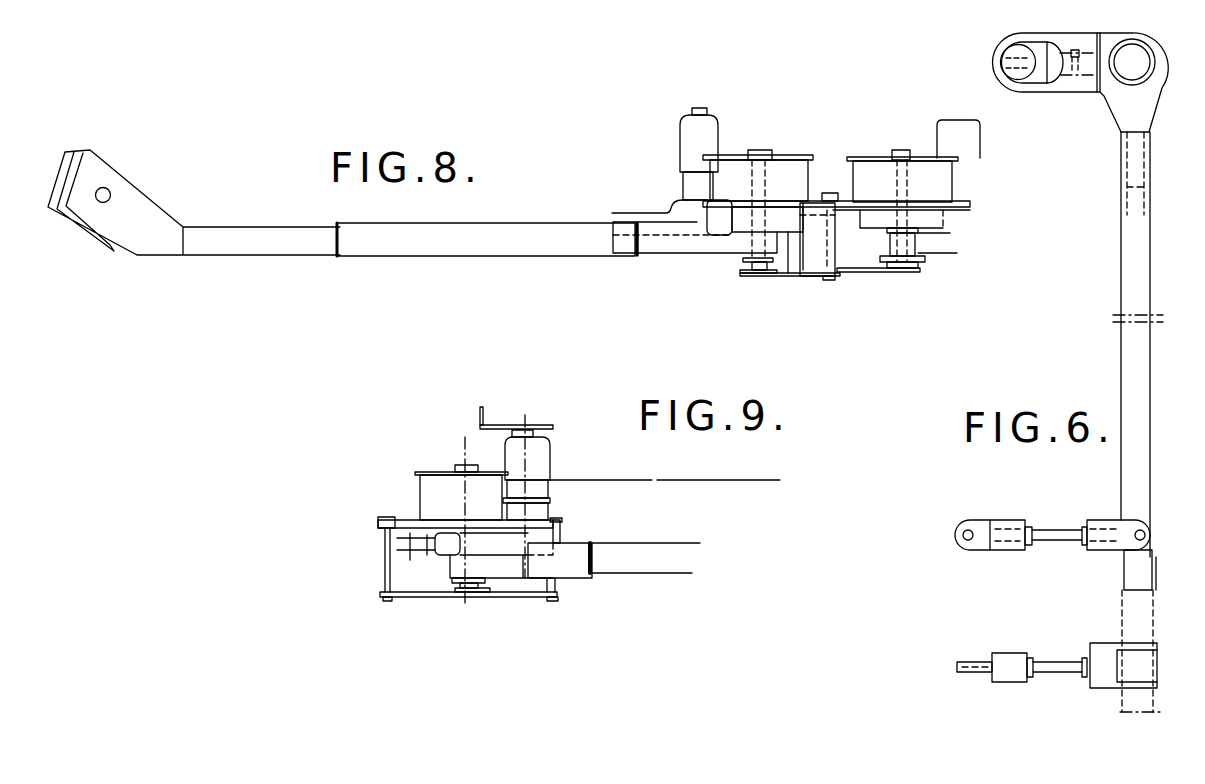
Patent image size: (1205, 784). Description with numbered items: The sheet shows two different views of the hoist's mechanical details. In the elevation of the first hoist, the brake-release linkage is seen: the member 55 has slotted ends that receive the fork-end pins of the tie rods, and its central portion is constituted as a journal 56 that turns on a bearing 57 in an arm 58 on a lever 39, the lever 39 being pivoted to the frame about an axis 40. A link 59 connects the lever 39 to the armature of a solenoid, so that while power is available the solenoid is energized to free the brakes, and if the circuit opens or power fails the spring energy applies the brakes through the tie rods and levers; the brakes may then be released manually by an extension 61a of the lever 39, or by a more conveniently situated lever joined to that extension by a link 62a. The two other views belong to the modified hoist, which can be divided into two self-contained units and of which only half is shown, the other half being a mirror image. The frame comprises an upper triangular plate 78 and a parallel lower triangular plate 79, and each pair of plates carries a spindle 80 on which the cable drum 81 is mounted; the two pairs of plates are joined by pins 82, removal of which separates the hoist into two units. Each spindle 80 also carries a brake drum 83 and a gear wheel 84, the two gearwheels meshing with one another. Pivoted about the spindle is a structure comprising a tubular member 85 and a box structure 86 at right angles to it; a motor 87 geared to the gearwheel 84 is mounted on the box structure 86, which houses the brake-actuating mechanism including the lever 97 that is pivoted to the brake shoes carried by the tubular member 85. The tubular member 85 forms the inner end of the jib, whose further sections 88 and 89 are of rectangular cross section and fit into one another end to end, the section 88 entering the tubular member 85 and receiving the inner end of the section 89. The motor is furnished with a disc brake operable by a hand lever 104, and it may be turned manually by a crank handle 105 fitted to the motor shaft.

In FIG. 6, the lever 39 is at (1128, 298).
In FIG. 6, the axis 40 is at (1133, 67).
In FIG. 6, the member 55 is at (1042, 30).
In FIG. 6, the journal 56 is at (1008, 43).
In FIG. 6, the bearing 57 is at (1030, 60).
In FIG. 6, the arm 58 is at (1075, 50).
In FIG. 6, the link 59 is at (1052, 528).
In FIG. 6, the tube 61a is at (1133, 602).
In FIG. 6, the clevis link 62a is at (1007, 658).
In FIG. 8, the upper triangular plate 78 is at (840, 195).
In FIG. 9, the upper triangular plate 78 is at (410, 527).
In FIG. 8, the lower triangular plate 79 is at (782, 273).
In FIG. 9, the lower triangular plate 79 is at (443, 595).
In FIG. 8, the spindle 80 is at (768, 150).
In FIG. 8, the cable drum 81 is at (732, 157).
In FIG. 9, the cable drum 81 is at (443, 482).
In FIG. 8, the pin 82 is at (828, 240).
In FIG. 9, the pin 82 is at (383, 572).
In FIG. 8, the brake drum 83 is at (790, 232).
In FIG. 9, the brake drum 83 is at (427, 553).
In FIG. 8, the gear wheel 84 is at (780, 200).
In FIG. 9, the gear wheel 84 is at (450, 530).
In FIG. 8, the tubular member 85 is at (675, 243).
In FIG. 9, the tubular member 85 is at (570, 555).
In FIG. 8, the box structure 86 is at (650, 212).
In FIG. 9, the box structure 86 is at (532, 532).
In FIG. 8, the motor 87 is at (688, 142).
In FIG. 9, the motor 87 is at (538, 457).
In FIG. 8, the jib section 88 is at (477, 243).
In FIG. 9, the jib section 88 is at (663, 560).
In FIG. 8, the jib section 89 is at (283, 243).
In FIG. 9, the lever 97 is at (403, 540).
In FIG. 9, the hand lever 104 is at (550, 433).
In FIG. 9, the crank handle 105 is at (498, 425).